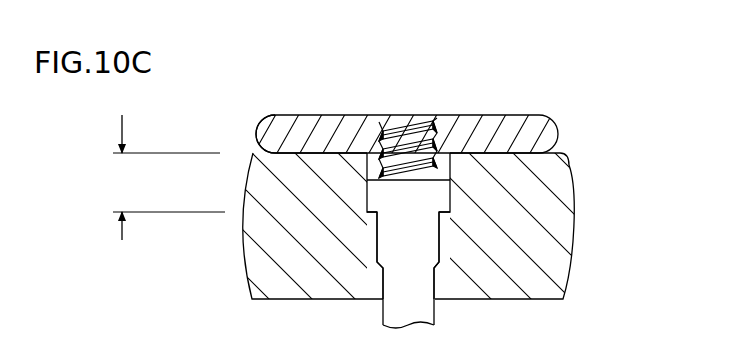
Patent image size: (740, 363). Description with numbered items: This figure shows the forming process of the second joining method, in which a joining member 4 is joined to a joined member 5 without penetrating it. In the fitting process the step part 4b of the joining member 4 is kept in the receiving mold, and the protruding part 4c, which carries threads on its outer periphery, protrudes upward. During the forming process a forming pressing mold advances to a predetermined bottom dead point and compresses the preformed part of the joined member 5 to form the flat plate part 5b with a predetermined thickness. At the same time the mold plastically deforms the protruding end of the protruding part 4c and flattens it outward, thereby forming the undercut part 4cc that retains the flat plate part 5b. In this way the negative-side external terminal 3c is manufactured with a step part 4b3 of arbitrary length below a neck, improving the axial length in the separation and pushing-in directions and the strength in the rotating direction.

The negative-side external terminal 3c is at (375, 245).
The joined member 5 is at (258, 129).
The flat plate part 5b is at (258, 148).
The undercut part 4cc is at (262, 119).
The joining member 4 is at (415, 238).
The step part 4b is at (440, 192).
The protruding part 4c is at (437, 133).
The step part 4b3 is at (169, 177).